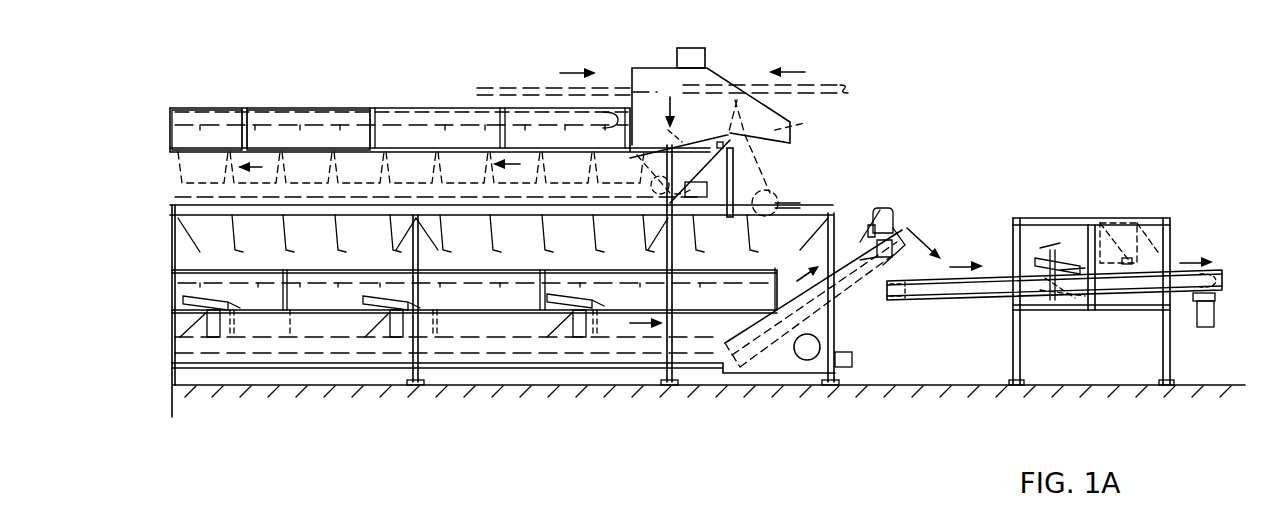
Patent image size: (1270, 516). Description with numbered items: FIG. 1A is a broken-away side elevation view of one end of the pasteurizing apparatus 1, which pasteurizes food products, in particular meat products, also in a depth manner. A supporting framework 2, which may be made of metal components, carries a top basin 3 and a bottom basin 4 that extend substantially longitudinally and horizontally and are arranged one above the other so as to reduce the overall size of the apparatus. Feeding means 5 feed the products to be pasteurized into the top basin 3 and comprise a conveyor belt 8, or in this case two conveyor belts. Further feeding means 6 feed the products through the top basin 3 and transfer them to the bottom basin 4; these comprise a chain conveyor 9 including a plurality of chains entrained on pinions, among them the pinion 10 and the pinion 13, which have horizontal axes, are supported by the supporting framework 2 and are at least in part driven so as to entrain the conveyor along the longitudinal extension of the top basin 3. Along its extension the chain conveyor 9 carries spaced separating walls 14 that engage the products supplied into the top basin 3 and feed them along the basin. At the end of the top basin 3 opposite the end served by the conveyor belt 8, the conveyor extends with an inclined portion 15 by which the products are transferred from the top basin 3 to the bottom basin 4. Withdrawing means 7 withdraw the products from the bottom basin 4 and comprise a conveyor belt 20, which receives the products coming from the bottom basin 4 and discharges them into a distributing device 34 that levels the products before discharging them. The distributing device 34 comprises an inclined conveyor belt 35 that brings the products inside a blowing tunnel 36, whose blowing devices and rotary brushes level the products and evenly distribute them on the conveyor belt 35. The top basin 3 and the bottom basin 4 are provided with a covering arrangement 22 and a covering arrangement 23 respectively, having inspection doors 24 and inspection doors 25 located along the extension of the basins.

The pasteurizing apparatus 1 is at (988, 133).
The supporting framework 2 is at (492, 369).
The top basin 3 is at (468, 162).
The bottom basin 4 is at (318, 333).
The feeding means 5 is at (710, 86).
The further feeding means 6 is at (425, 183).
The withdrawing means 7 is at (872, 208).
The conveyor belt 8 is at (601, 83).
The chain conveyor 9 is at (755, 173).
The pinion 10 is at (811, 118).
The pinion 13 is at (773, 203).
The separating walls 14 is at (346, 140).
The inclined portion 15 is at (227, 490).
The conveyor belt 20 is at (853, 278).
The covering arrangement 22 is at (278, 112).
The covering arrangement 23 is at (178, 268).
The inspection doors 24 is at (212, 135).
The inspection doors 25 is at (325, 297).
The distributing device 34 is at (1056, 208).
The inclined conveyor belt 35 is at (946, 290).
The blowing tunnel 36 is at (1105, 235).